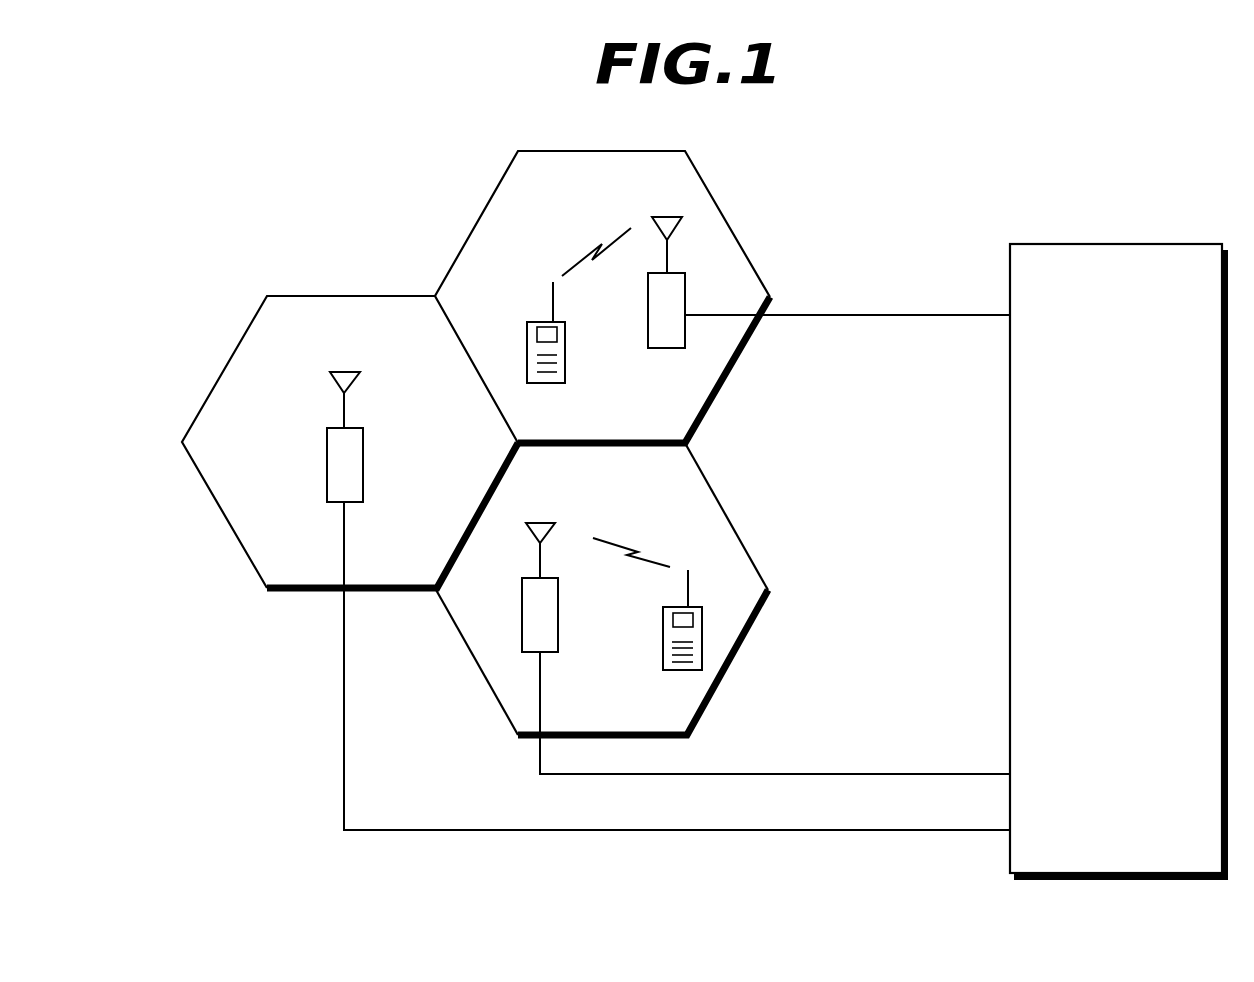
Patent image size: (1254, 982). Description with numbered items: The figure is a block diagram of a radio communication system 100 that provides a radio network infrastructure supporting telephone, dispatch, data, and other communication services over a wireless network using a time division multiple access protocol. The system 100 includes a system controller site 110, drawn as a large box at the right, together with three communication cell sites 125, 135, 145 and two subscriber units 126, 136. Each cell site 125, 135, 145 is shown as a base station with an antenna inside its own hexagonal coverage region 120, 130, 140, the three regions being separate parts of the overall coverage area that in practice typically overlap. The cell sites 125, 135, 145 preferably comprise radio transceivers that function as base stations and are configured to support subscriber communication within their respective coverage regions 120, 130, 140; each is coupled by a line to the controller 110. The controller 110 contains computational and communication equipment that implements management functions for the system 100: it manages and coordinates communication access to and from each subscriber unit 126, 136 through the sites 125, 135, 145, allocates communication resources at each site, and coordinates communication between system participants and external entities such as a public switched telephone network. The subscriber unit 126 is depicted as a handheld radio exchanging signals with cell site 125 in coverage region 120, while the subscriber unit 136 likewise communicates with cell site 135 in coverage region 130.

The radio communication system 100 is at (701, 916).
The system controller site 110 is at (1138, 242).
The coverage region 120 is at (725, 215).
The communication cell site 125 is at (667, 348).
The subscriber unit 126 is at (530, 322).
The coverage region 130 is at (733, 523).
The communication cell site 135 is at (522, 615).
The subscriber unit 136 is at (662, 638).
The coverage region 140 is at (240, 338).
The communication cell site 145 is at (327, 472).